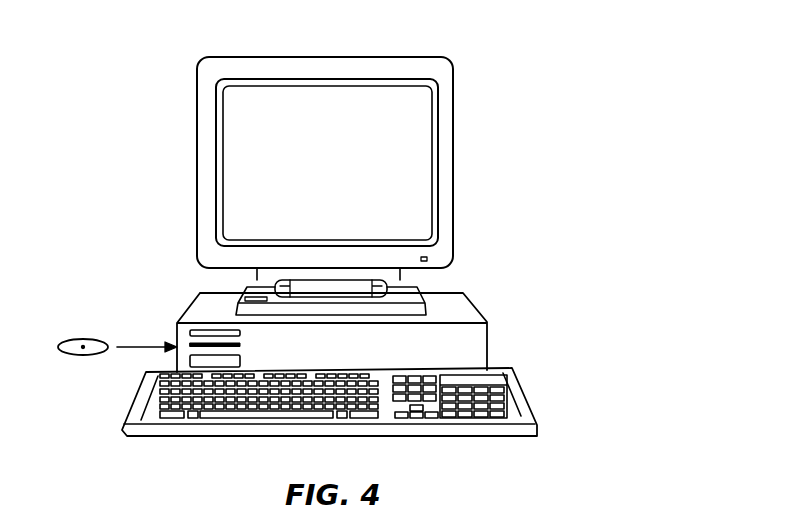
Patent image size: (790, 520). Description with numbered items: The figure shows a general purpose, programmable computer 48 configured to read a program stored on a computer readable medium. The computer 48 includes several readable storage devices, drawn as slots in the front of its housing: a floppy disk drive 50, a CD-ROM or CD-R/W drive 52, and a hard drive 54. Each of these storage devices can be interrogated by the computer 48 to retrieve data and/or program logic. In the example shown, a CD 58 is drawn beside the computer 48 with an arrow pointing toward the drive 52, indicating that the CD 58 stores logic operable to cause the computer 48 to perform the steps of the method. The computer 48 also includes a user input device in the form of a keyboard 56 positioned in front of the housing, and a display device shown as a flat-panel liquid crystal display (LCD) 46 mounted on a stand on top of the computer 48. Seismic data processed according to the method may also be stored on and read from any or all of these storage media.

The flat-panel liquid crystal display 46 is at (427, 57).
The programmable computer 48 is at (475, 302).
The floppy disk drive 50 is at (188, 328).
The CD-ROM or CD-R/W drive 52 is at (240, 345).
The hard drive 54 is at (190, 356).
The keyboard 56 is at (513, 437).
The CD 58 is at (70, 338).